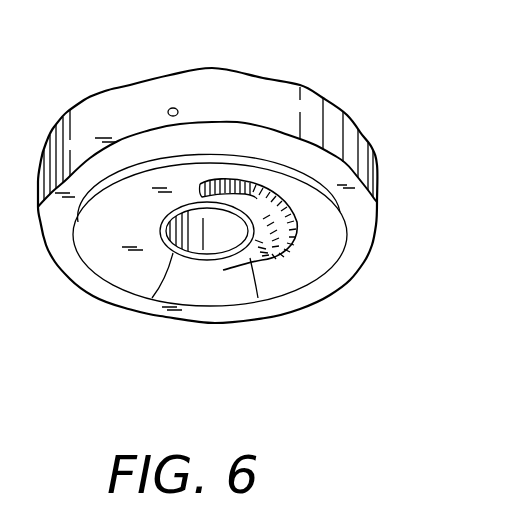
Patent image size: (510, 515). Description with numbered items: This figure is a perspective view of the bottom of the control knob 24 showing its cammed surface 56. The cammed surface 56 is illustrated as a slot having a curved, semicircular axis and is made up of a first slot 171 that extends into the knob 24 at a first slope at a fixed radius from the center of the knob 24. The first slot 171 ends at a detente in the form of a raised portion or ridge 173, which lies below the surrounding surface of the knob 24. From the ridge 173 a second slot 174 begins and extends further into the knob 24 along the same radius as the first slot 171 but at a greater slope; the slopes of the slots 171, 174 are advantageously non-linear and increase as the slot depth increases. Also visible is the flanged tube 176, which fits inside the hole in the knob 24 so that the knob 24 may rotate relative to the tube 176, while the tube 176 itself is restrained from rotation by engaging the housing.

The knob 24 is at (290, 84).
The cammed surface 56 is at (303, 253).
The first slot 171 is at (250, 270).
The ridge 173 is at (267, 262).
The second slot 174 is at (302, 210).
The flanged tube 176 is at (140, 302).